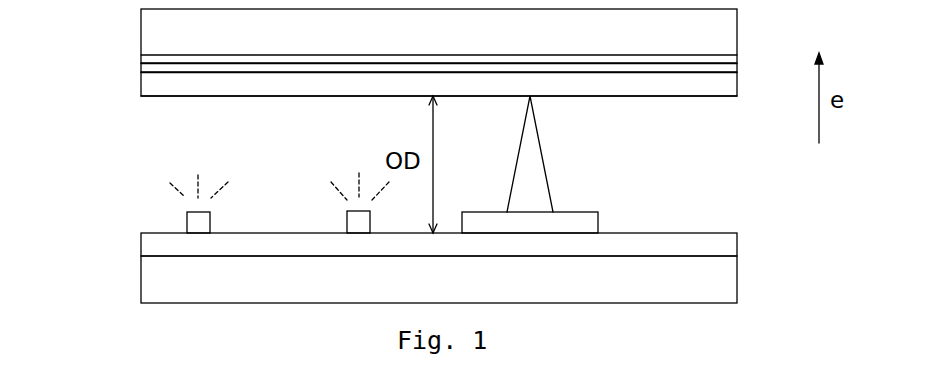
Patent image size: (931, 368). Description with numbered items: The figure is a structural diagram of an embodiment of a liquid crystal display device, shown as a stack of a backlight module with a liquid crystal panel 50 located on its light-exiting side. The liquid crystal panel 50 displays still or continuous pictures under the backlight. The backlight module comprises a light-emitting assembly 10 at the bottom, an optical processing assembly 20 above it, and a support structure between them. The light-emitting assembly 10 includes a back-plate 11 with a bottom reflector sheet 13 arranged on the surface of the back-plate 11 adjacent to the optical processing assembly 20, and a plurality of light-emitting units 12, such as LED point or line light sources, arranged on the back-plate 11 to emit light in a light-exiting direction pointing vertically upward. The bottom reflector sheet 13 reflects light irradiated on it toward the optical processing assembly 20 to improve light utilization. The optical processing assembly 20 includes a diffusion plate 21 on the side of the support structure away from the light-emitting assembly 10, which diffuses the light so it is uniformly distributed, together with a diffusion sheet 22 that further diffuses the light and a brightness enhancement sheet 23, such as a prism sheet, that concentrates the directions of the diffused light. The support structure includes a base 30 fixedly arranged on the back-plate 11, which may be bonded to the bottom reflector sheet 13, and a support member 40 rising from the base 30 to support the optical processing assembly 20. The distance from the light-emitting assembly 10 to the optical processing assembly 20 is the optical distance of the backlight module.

The light-emitting assembly 10 is at (384, 238).
The back-plate 11 is at (155, 277).
The light-emitting units 12 is at (356, 218).
The bottom reflector sheet 13 is at (155, 242).
The optical processing assembly 20 is at (383, 59).
The diffusion plate 21 is at (150, 83).
The diffusion sheet 22 is at (150, 64).
The brightness enhancement sheet 23 is at (150, 58).
The base 30 is at (590, 223).
The support member 40 is at (528, 177).
The liquid crystal panel 50 is at (725, 33).